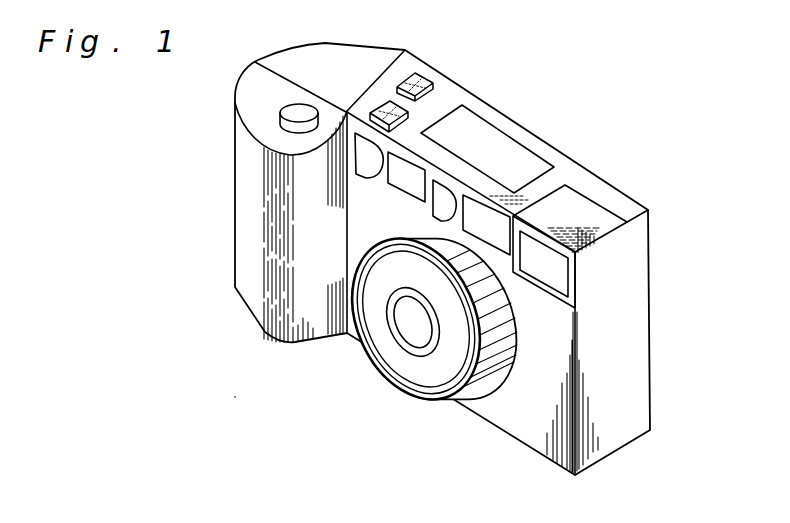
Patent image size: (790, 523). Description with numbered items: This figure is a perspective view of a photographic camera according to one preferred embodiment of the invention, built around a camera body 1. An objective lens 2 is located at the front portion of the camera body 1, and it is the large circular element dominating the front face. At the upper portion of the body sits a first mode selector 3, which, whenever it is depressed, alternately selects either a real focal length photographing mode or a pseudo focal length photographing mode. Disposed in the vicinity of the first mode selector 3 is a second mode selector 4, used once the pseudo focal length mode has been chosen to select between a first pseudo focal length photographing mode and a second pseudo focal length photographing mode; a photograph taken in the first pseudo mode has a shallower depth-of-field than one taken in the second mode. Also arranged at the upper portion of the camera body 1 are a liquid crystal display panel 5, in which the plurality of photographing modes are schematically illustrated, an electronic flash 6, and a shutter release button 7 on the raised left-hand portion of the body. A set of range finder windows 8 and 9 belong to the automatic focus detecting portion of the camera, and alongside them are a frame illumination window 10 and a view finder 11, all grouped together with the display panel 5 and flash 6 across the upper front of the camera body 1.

The camera body 1 is at (298, 340).
The objective lens 2 is at (411, 333).
The first mode selector 3 is at (389, 106).
The second mode selector 4 is at (417, 82).
The liquid crystal display panel 5 is at (491, 141).
The electronic flash 6 is at (532, 252).
The shutter release button 7 is at (299, 108).
The range finder window 8 is at (365, 156).
The range finder window 9 is at (442, 196).
The frame illumination window 10 is at (406, 172).
The view finder 11 is at (483, 212).